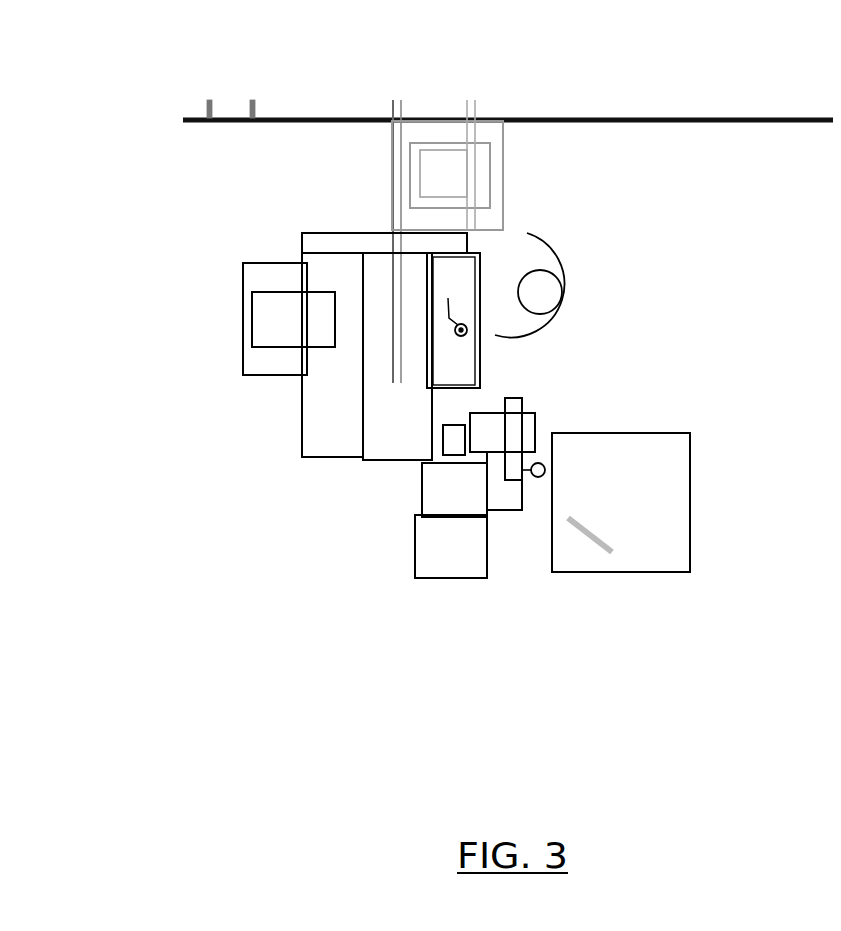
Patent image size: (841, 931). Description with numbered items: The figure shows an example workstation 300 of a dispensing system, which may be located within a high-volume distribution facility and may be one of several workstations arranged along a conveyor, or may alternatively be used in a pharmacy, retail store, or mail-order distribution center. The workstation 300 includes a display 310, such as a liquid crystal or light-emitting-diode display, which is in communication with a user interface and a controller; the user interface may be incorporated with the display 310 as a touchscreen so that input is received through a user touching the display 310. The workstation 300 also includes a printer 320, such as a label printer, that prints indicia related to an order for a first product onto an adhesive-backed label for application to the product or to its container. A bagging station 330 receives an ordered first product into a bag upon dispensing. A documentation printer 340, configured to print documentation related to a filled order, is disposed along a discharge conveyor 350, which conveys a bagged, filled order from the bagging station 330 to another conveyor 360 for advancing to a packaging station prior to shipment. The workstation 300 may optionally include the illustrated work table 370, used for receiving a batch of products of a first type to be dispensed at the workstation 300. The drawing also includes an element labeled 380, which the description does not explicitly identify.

The workstation 300 is at (183, 204).
The display 310 is at (477, 407).
The printer 320 is at (443, 555).
The bagging station 330 is at (373, 355).
The documentation printer 340 is at (475, 167).
The discharge conveyor 350 is at (397, 117).
The conveyor 360 is at (293, 107).
The work table 370 is at (623, 483).
The roller and guide arc 380 is at (562, 237).